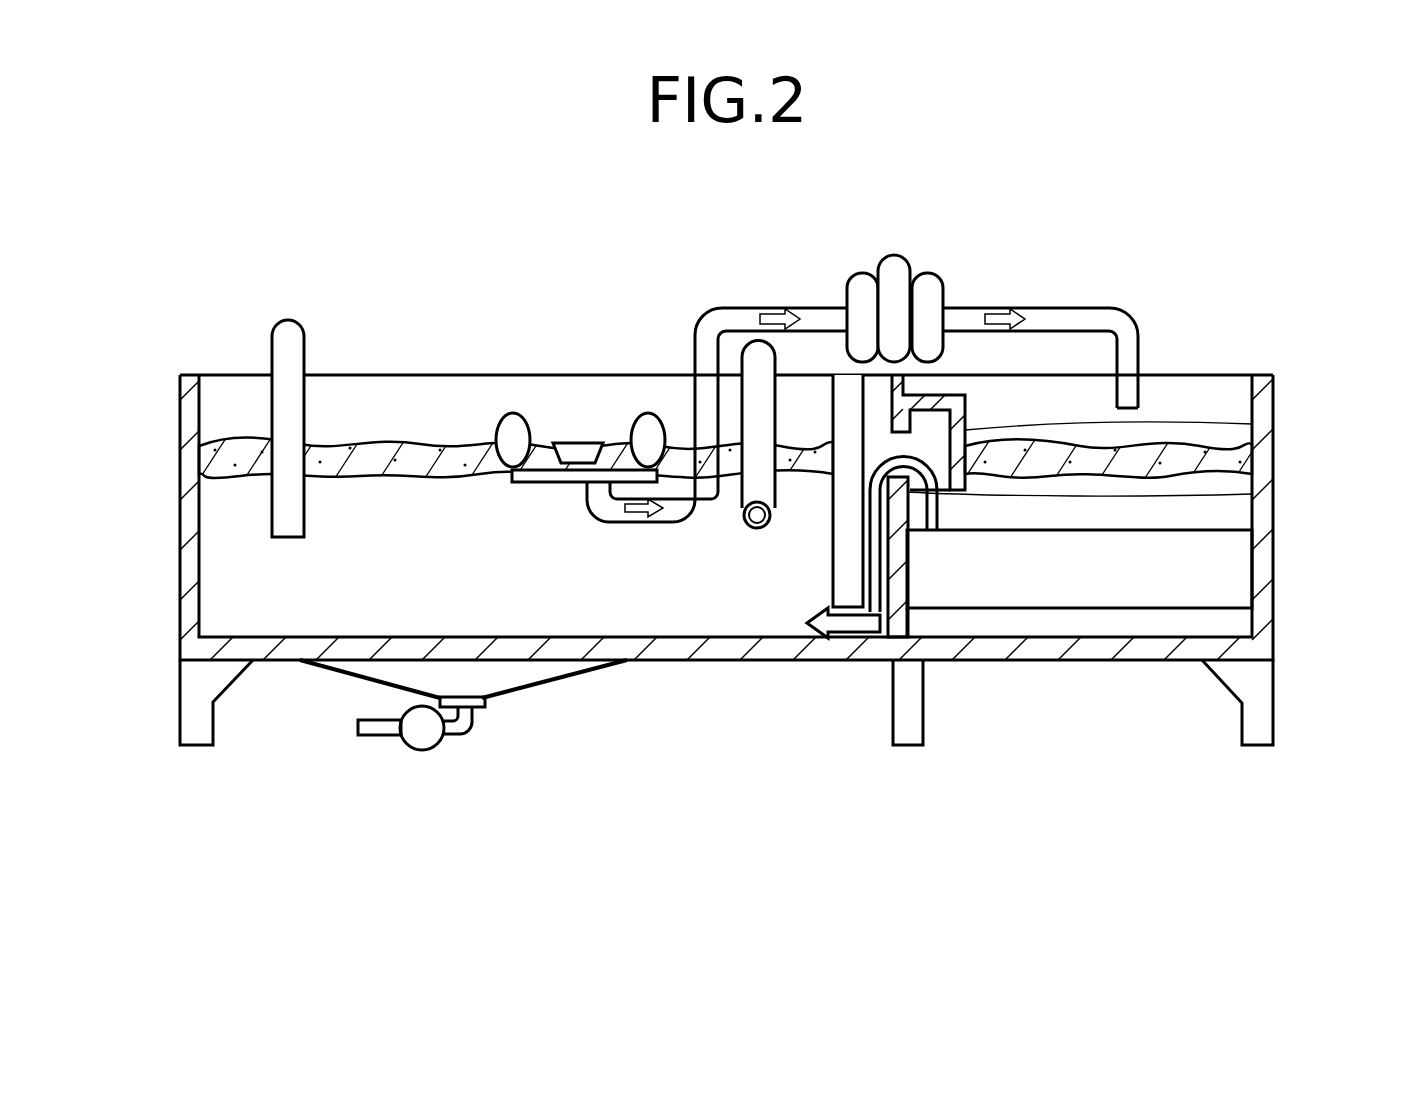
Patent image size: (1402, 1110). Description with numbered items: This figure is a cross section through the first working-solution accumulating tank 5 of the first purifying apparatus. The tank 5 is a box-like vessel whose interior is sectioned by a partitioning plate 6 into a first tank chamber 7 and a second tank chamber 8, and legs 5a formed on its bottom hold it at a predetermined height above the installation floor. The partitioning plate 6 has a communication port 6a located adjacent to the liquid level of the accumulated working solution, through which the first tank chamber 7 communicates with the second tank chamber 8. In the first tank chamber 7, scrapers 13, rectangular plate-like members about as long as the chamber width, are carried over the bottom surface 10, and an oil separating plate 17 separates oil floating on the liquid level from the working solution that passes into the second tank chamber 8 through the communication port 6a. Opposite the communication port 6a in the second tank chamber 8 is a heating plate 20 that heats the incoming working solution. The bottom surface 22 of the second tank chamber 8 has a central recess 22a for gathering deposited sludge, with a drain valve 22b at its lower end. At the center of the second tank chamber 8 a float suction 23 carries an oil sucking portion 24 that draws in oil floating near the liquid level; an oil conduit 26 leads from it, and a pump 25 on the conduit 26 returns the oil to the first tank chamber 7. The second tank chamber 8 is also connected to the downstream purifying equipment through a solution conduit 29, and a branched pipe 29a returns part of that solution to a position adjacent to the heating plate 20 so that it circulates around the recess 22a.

The first working-solution accumulating tank 5 is at (1265, 565).
The legs 5a is at (193, 717).
The partitioning plate 6 is at (872, 633).
The communication port 6a is at (945, 400).
The first tank chamber 7 is at (1218, 390).
The second tank chamber 8 is at (425, 350).
The bottom surface of the first tank chamber 10 is at (1104, 650).
The scrapers 13 is at (1078, 512).
The oil separating plate 17 is at (1252, 424).
The heating plate 20 is at (848, 392).
The bottom surface of the second tank chamber 22 is at (627, 662).
The recess 22a is at (550, 680).
The drain valve 22b is at (430, 752).
The float suction 23 is at (660, 383).
The oil sucking portion 24 is at (518, 518).
The pump 25 is at (893, 272).
The oil conduit 26 is at (740, 315).
The solution conduit 29 is at (292, 330).
The branched pipe 29a is at (757, 533).